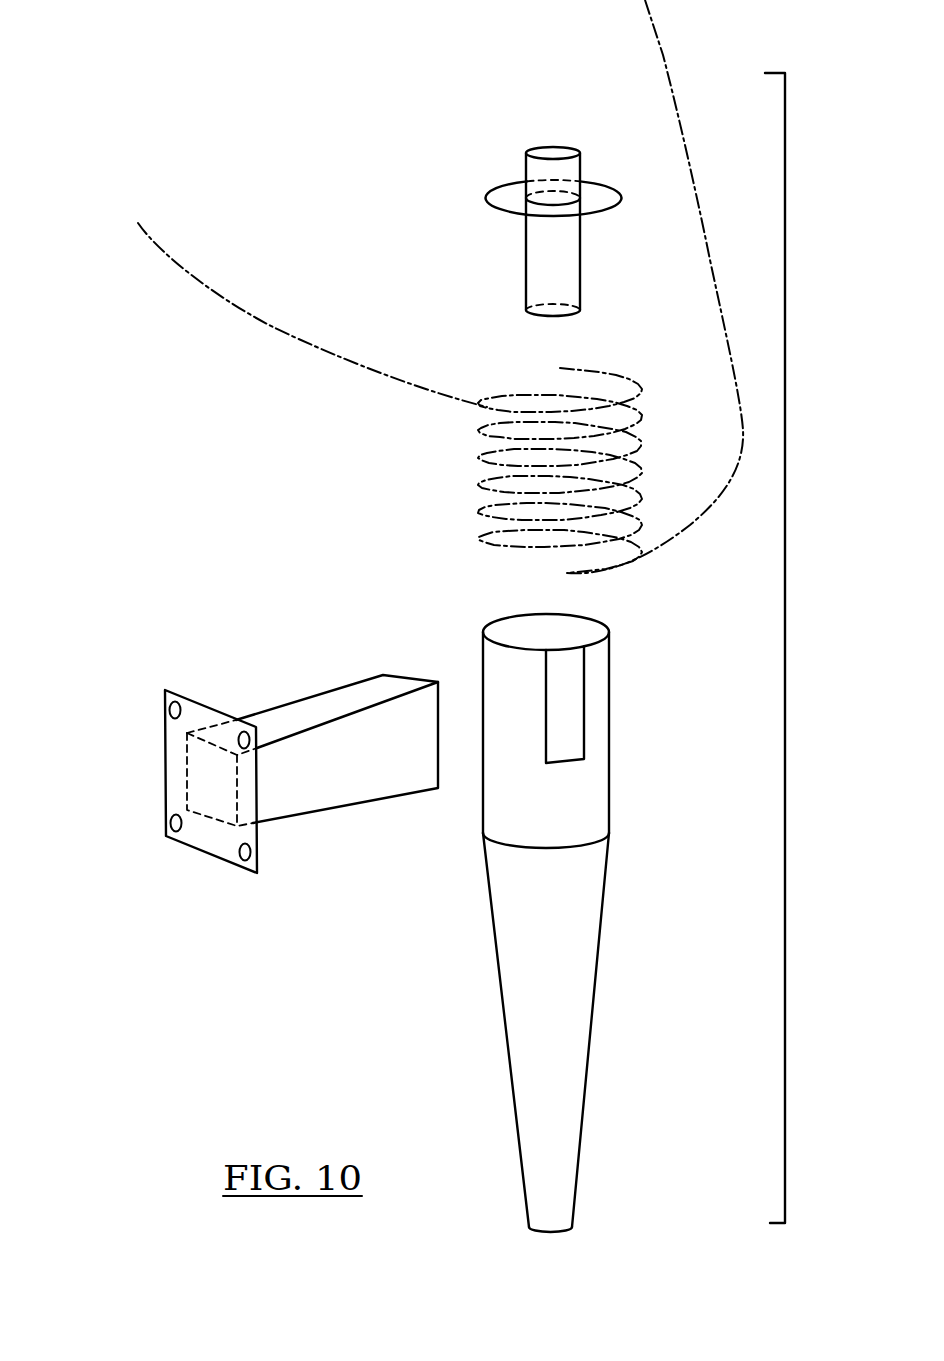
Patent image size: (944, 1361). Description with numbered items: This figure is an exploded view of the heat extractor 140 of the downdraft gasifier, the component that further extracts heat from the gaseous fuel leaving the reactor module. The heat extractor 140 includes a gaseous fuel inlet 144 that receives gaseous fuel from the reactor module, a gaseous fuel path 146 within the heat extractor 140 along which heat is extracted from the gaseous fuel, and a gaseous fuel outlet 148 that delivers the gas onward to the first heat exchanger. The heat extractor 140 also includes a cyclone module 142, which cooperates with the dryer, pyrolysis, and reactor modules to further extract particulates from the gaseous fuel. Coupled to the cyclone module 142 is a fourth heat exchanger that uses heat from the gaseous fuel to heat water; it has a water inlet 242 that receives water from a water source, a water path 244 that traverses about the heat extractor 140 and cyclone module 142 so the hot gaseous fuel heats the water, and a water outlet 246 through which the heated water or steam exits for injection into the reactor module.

The heat extractor 140 is at (785, 648).
The cyclone module 142 is at (497, 977).
The gaseous fuel inlet 144 is at (197, 773).
The gaseous fuel path 146 is at (568, 785).
The gaseous fuel outlet 148 is at (525, 173).
The water inlet 242 is at (663, 55).
The water path 244 is at (477, 443).
The water outlet 246 is at (138, 233).